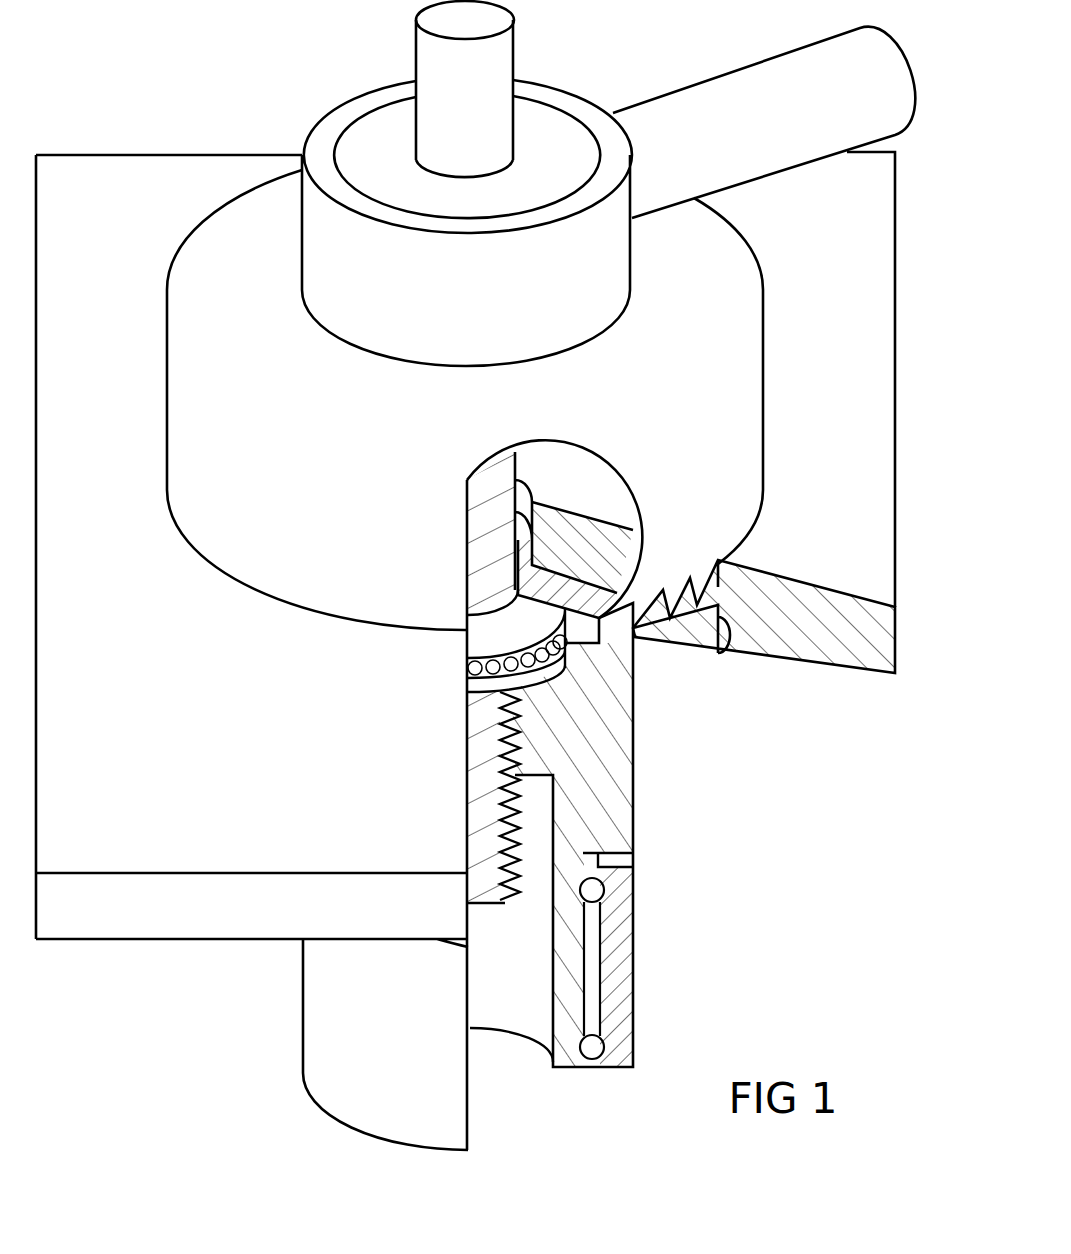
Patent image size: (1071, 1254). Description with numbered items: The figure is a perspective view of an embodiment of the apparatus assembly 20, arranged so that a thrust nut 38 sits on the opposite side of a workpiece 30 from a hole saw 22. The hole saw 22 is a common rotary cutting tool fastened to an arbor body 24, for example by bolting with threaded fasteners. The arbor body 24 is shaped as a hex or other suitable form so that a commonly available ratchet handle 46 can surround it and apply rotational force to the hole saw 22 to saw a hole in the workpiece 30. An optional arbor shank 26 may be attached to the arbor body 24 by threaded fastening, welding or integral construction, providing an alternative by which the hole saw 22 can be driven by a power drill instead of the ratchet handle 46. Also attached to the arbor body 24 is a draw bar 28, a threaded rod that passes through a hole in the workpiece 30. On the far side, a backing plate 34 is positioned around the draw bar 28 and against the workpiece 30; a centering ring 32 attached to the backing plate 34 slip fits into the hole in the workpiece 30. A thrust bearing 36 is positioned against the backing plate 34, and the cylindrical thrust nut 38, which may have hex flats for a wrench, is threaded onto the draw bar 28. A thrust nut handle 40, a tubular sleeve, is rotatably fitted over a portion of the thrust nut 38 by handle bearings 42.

The apparatus assembly 20 is at (740, 740).
The hole saw 22 is at (267, 220).
The arbor body 24 is at (383, 138).
The arbor shank 26 is at (430, 57).
The draw bar 28 is at (473, 900).
The workpiece 30 is at (140, 910).
The centering ring 32 is at (523, 547).
The backing plate 34 is at (723, 636).
The thrust bearing 36 is at (495, 635).
The thrust nut 38 is at (600, 822).
The thrust nut handle 40 is at (618, 984).
The handle bearings 42 is at (592, 890).
The ratchet handle 46 is at (533, 85).